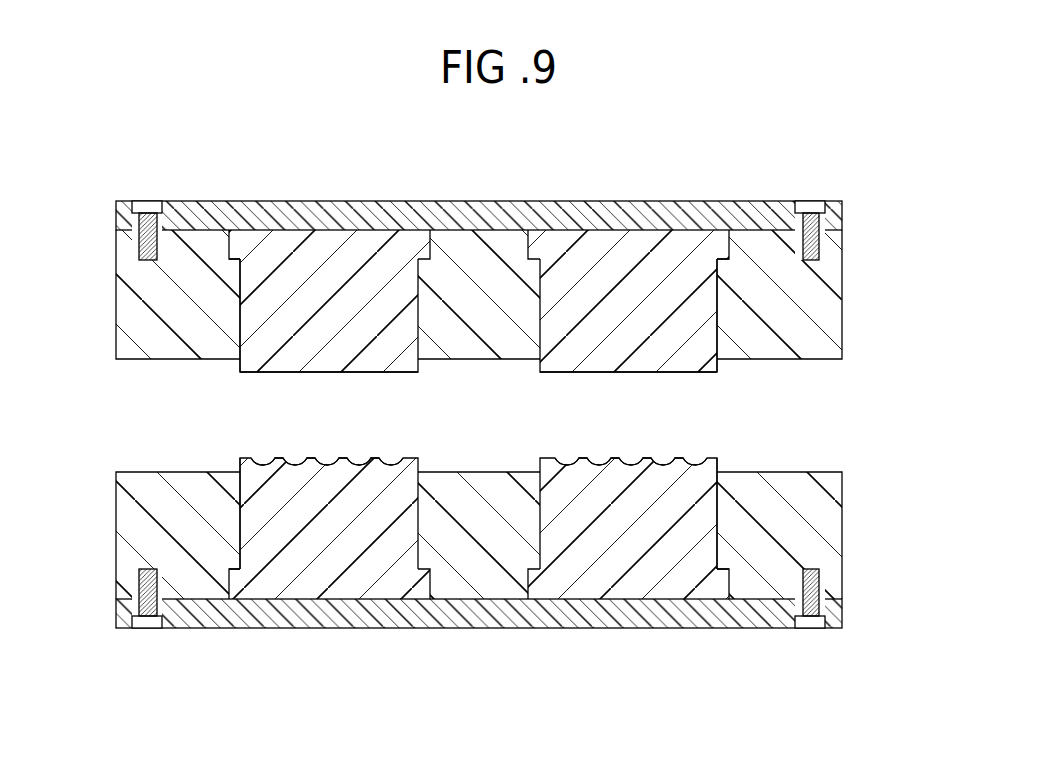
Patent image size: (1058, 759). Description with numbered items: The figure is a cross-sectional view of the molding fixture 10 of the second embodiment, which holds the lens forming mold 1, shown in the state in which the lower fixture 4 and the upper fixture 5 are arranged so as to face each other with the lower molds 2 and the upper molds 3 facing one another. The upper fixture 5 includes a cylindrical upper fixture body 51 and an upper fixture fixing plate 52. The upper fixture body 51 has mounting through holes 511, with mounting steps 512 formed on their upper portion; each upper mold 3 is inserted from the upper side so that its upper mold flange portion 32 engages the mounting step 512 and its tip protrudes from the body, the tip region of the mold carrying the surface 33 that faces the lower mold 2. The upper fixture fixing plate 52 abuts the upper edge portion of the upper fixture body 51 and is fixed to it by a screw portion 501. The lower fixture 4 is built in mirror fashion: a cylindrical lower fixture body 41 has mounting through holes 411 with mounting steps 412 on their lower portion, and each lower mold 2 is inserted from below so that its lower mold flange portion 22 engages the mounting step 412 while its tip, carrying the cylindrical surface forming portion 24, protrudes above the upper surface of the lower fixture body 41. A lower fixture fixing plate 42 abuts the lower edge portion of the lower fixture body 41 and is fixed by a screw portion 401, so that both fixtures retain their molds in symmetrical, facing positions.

The molding fixture 10 is at (499, 419).
The lens forming mold 1 is at (479, 414).
The upper fixture 5 is at (499, 265).
The lower fixture 4 is at (499, 570).
The upper mold 3 is at (441, 243).
The lower mold 2 is at (441, 590).
The upper fixture fixing plate 52 is at (128, 212).
The upper fixture body 51 is at (128, 247).
The screw portion 501 is at (147, 201).
The upper mold flange portion 32 is at (236, 244).
The mounting step 512 is at (231, 258).
The mounting through hole 511 is at (244, 293).
The upper core molding surface 33 is at (330, 373).
The lower fixture fixing plate 42 is at (128, 611).
The lower fixture body 41 is at (128, 574).
The screw portion 401 is at (147, 628).
The lower mold flange portion 22 is at (236, 585).
The mounting step 412 is at (230, 583).
The mounting through hole 411 is at (240, 528).
The cylindrical surface forming portion 24 is at (267, 462).